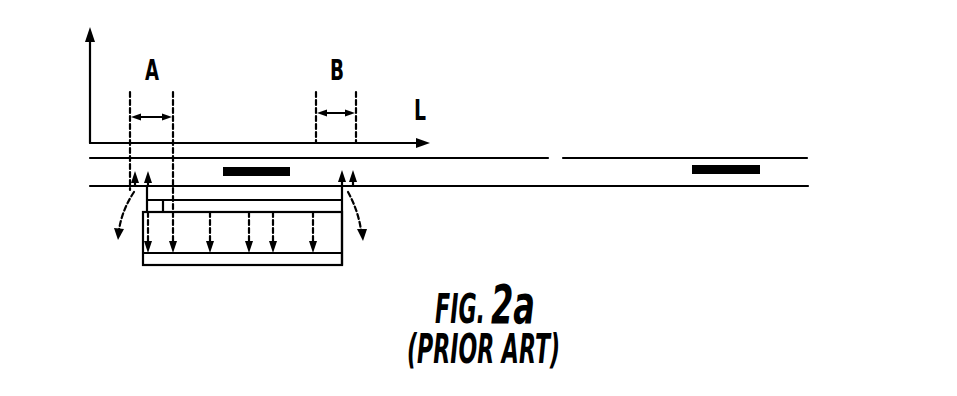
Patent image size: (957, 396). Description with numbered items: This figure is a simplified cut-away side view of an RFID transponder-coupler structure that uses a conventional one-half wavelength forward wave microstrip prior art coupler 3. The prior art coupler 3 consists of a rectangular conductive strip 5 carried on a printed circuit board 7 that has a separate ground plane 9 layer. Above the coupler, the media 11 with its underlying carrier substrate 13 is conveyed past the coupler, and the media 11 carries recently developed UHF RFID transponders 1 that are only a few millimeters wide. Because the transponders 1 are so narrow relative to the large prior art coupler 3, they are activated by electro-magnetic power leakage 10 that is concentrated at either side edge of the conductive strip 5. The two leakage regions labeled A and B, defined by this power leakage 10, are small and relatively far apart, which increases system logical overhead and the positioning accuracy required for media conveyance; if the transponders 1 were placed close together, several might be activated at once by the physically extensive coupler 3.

The RFID transponder 1 is at (233, 169).
The prior art coupler 3 is at (378, 245).
The conductive strip 5 is at (170, 215).
The printed circuit board 7 is at (344, 236).
The ground plane 9 is at (247, 267).
The electro-magnetic power leakage 10 is at (132, 194).
The media 11 is at (480, 157).
The carrier substrate 13 is at (488, 188).